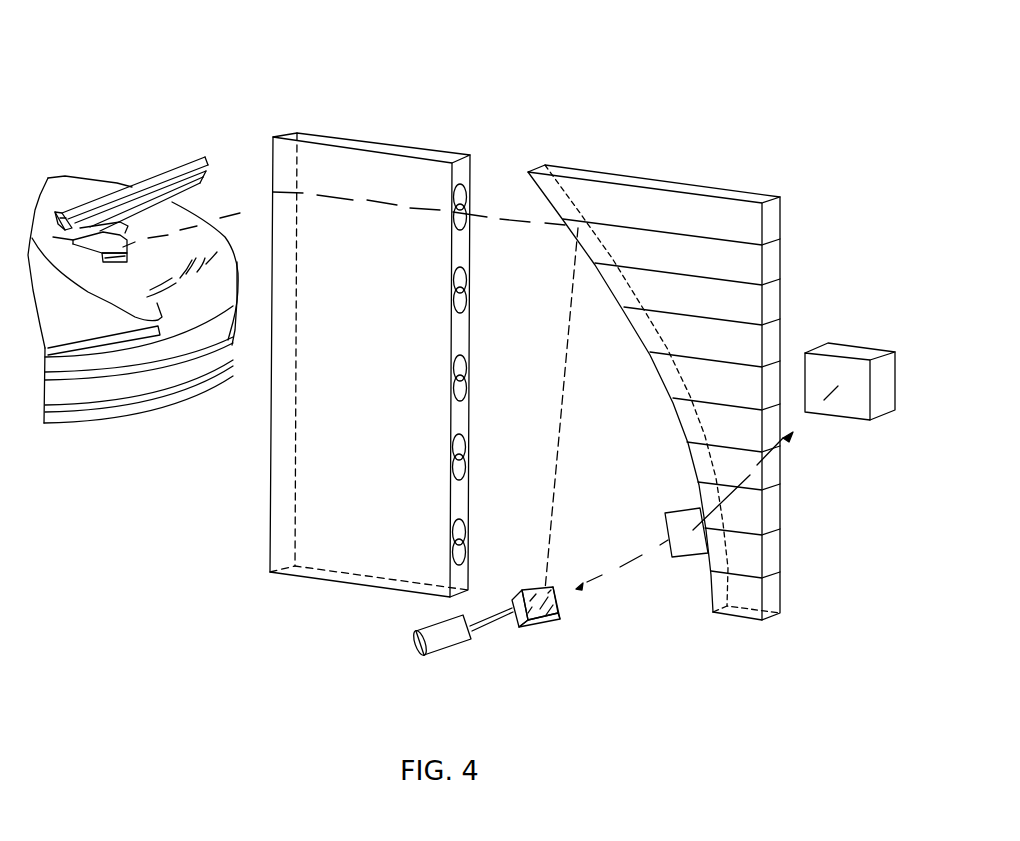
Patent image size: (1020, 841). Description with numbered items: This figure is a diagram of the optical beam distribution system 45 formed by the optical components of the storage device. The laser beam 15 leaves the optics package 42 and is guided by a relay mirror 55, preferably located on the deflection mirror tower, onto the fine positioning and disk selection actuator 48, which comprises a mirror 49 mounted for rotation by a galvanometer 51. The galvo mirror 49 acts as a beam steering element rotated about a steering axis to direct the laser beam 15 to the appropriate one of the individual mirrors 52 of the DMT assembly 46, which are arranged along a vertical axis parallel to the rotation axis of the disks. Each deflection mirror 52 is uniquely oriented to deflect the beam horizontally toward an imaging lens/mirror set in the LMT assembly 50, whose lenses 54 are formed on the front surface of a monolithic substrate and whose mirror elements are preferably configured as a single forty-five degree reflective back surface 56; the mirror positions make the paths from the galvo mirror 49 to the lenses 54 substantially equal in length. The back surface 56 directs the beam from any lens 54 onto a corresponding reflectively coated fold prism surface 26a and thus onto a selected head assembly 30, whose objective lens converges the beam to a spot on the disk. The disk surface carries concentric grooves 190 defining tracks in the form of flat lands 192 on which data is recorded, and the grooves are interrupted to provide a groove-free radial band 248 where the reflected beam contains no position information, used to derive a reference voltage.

The optical beam distribution system 45 is at (224, 126).
The fold prism surface 26a is at (108, 266).
The head assembly 30 is at (122, 258).
The concentric grooves 190 is at (155, 322).
The flat lands 192 is at (175, 306).
The groove-free radial band 248 is at (196, 292).
The LMT assembly 50 is at (268, 205).
The reflective back surface 56 is at (285, 327).
The lens 54 is at (461, 375).
The DMT assembly 46 is at (797, 232).
The mirror 52 is at (653, 372).
The optics package 42 is at (867, 422).
The relay mirror 55 is at (672, 513).
The laser beam 15 is at (631, 562).
The fine positioning and disk selection actuator 48 is at (543, 623).
The mirror 49 is at (560, 612).
The galvanometer 51 is at (471, 636).